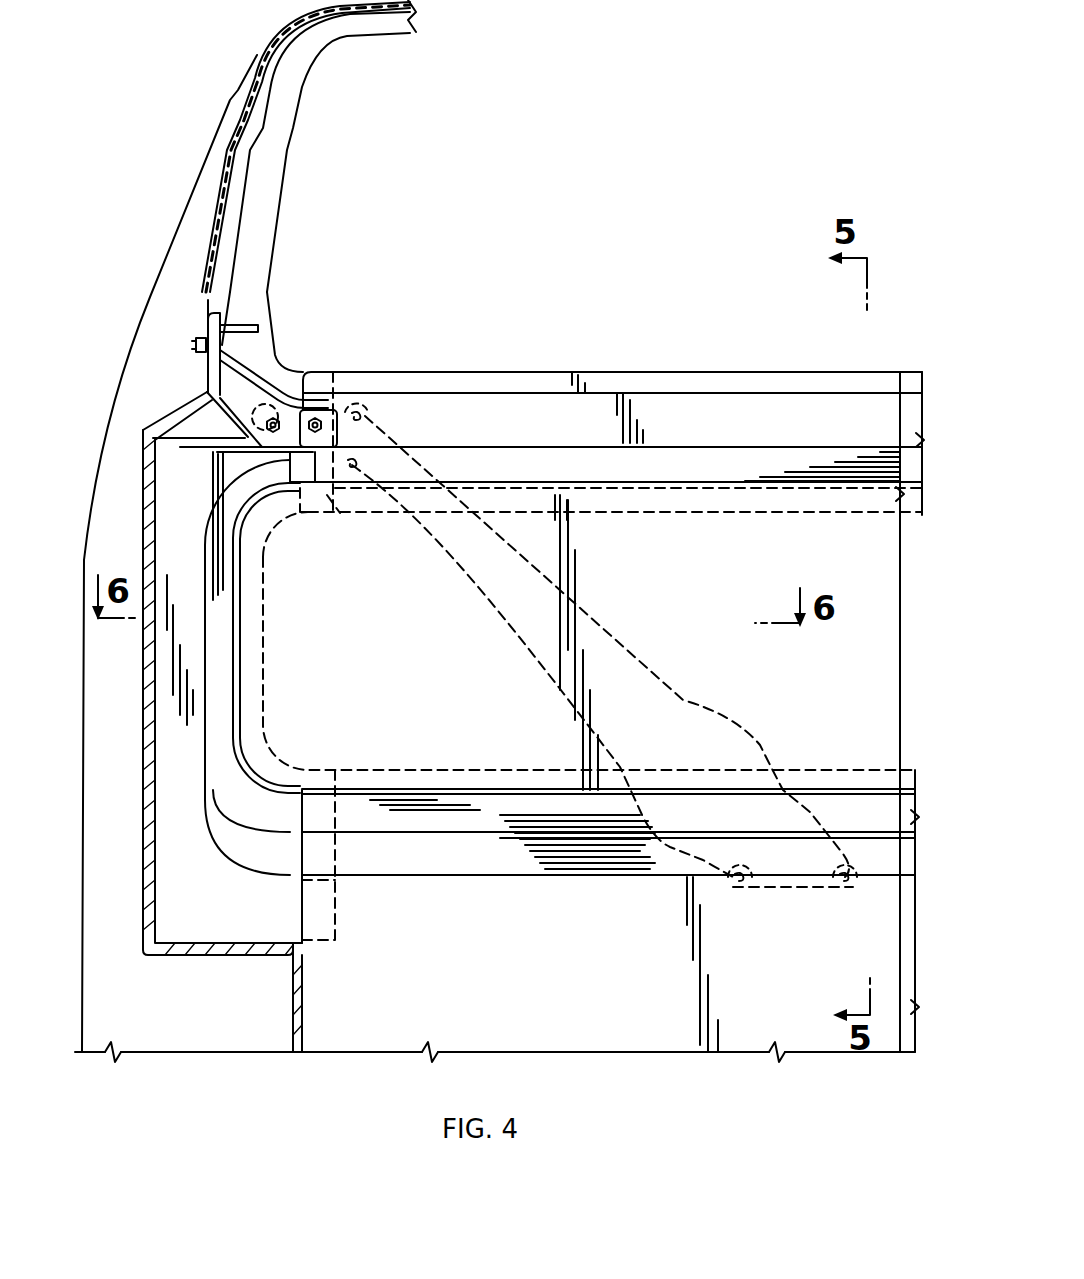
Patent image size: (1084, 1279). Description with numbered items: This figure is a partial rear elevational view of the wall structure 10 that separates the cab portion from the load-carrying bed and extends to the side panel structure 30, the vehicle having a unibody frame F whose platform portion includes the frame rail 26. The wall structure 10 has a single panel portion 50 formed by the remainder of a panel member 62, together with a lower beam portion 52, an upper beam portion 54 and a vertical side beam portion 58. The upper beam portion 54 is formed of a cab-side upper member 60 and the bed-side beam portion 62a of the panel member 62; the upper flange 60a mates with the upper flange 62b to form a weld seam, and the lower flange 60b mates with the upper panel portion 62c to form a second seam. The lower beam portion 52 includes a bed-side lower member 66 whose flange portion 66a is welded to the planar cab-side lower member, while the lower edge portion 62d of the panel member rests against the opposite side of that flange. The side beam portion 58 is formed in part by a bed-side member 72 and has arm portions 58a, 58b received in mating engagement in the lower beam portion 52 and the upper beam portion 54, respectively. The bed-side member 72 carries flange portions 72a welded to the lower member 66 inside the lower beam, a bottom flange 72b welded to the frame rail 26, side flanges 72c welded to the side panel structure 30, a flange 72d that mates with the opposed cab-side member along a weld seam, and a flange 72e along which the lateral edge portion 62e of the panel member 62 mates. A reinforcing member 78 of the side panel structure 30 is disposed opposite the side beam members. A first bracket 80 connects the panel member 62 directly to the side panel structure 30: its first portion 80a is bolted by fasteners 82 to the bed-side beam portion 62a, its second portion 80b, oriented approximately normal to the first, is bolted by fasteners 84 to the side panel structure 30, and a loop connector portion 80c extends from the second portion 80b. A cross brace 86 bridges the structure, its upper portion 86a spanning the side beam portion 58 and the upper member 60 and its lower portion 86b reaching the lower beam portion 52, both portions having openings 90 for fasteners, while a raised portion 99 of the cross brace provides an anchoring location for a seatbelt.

The wall structure 10 is at (712, 340).
The frame rail 26 is at (305, 1000).
The side panel structure 30 is at (150, 868).
The panel portion 50 is at (890, 615).
The lower beam portion 52 is at (738, 1038).
The upper beam portion 54 is at (633, 366).
The side beam portion 58 is at (166, 653).
The arm portion 58a is at (288, 840).
The arm portion 58b is at (291, 490).
The cab-side upper member 60 is at (905, 417).
The upper flange 60a is at (908, 383).
The lower flange 60b is at (612, 512).
The panel member 62 is at (435, 696).
The bed-side beam portion 62a is at (767, 410).
The upper flange 62b is at (545, 372).
The upper panel portion 62c is at (735, 512).
The lower edge portion 62d is at (473, 780).
The lateral edge portion 62e is at (255, 645).
The bed-side lower member 66 is at (623, 1035).
The flange portion 66a is at (417, 778).
The bed-side member 72 is at (170, 732).
The flange portions 72a is at (335, 907).
The bottom flange 72b is at (218, 943).
The side flanges 72c is at (247, 133).
The flange 72d is at (265, 218).
The flange 72e is at (258, 617).
The reinforcing member 78 is at (135, 354).
The first bracket 80 is at (258, 366).
The first portion 80a is at (333, 415).
The second portion 80b is at (207, 322).
The loop connector portion 80c is at (256, 326).
The fasteners 82 is at (270, 425).
The fasteners 84 is at (195, 353).
The cross brace 86 is at (612, 628).
The upper portion 86a is at (383, 432).
The lower portion 86b is at (787, 890).
The openings 90 is at (400, 393).
The raised portion 99 is at (716, 758).
The frame F is at (306, 1038).